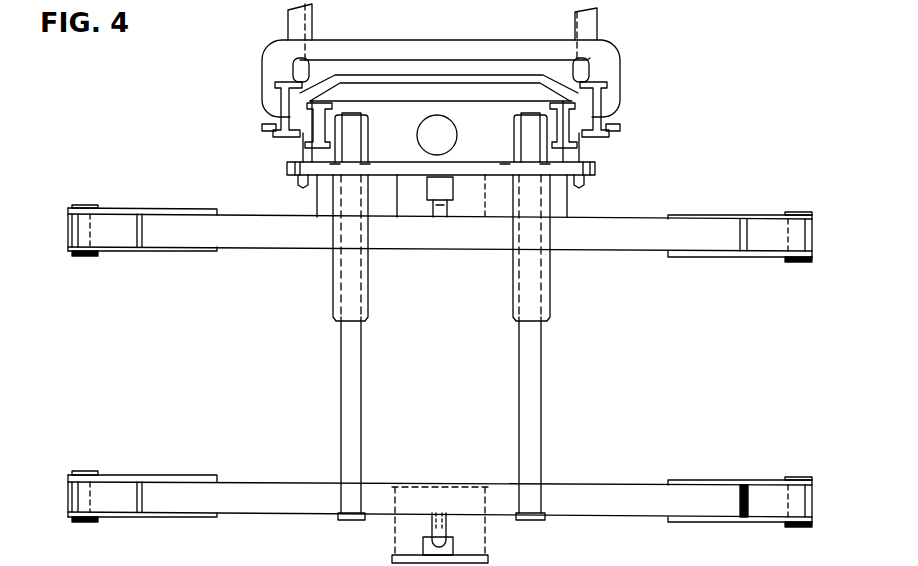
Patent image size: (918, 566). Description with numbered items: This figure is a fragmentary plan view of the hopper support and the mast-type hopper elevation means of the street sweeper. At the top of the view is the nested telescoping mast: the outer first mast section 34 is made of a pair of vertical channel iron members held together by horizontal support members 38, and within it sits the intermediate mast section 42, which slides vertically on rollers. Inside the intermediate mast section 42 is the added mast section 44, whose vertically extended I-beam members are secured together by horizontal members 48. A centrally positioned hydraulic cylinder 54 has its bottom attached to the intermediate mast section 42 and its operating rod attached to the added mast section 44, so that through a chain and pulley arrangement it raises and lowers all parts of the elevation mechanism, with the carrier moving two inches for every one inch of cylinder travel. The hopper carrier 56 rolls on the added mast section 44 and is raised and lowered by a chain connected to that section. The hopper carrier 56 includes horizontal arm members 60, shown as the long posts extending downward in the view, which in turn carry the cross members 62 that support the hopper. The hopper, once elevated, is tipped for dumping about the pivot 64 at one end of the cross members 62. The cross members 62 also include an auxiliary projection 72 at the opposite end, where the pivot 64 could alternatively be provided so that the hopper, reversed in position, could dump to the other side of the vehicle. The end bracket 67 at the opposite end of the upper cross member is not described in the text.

The horizontal support member 38 is at (385, 48).
The added mast section 44 is at (542, 100).
The first mast section 34 is at (594, 112).
The intermediate mast section 42 is at (609, 143).
The cylinder 54 is at (437, 135).
The hopper carrier 56 is at (551, 208).
The horizontal arm member 60 is at (343, 372).
The cross member 62 is at (245, 230).
The pivot 64 is at (83, 490).
The end bracket 67 is at (83, 232).
The auxiliary projection 72 is at (798, 232).
The horizontal member 48 is at (598, 559).